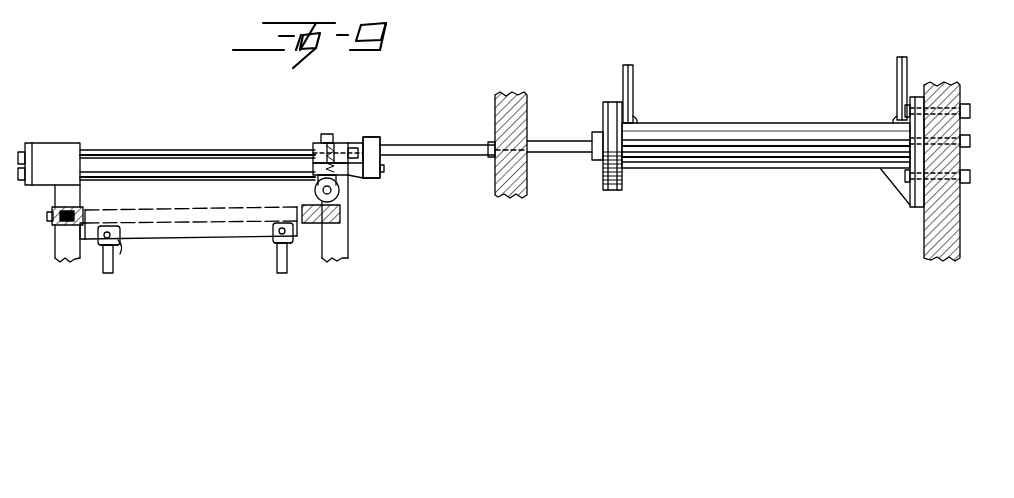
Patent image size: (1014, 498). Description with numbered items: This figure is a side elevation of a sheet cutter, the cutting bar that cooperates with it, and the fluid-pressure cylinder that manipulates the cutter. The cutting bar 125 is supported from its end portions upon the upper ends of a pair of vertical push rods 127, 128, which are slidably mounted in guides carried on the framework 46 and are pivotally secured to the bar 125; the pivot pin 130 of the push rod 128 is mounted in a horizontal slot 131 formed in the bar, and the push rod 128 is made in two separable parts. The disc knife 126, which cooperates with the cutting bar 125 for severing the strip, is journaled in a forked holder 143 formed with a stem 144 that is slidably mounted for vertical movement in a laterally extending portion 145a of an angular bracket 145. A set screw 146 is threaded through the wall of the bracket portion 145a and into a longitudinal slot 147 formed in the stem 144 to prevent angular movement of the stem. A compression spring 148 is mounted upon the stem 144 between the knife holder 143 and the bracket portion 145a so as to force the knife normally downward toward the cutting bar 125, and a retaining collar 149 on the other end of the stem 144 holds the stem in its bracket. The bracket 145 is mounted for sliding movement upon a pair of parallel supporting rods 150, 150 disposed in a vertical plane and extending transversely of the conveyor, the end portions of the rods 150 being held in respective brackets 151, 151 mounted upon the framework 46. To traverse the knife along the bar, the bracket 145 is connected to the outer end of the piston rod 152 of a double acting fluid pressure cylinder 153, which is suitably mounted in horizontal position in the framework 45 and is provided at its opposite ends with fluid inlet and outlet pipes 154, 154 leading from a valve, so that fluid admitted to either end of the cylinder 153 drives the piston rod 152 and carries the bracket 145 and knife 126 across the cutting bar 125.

The framework 45 is at (506, 197).
The framework 46 is at (60, 230).
The cutting bar 125 is at (212, 236).
The disc knife 126 is at (314, 192).
The push rod 127 is at (290, 270).
The push rod 128 is at (106, 272).
The pivot pin 130 is at (107, 232).
The horizontal slot 131 is at (118, 250).
The forked holder 143 is at (340, 190).
The stem 144 is at (318, 148).
The angular bracket 145 is at (352, 178).
The laterally extending portion 145a is at (352, 152).
The set screw 146 is at (318, 157).
The longitudinal slot 147 is at (330, 142).
The compression spring 148 is at (315, 170).
The retaining collar 149 is at (322, 143).
The supporting rods 150 is at (108, 152).
The brackets 151 is at (60, 186).
The piston rod 152 is at (462, 147).
The double acting fluid pressure cylinder 153 is at (740, 130).
The fluid inlet and outlet pipes 154 is at (636, 95).